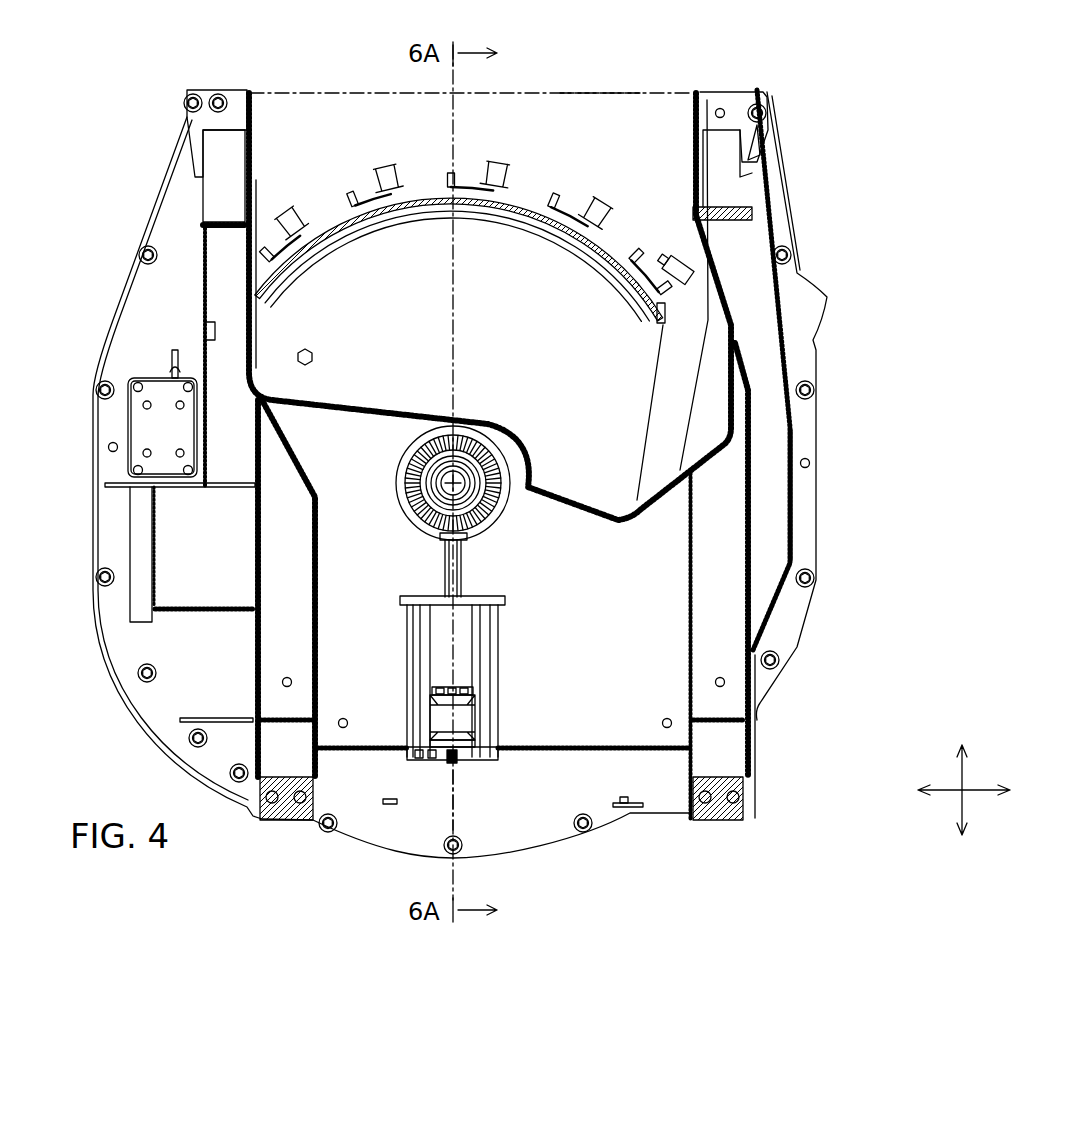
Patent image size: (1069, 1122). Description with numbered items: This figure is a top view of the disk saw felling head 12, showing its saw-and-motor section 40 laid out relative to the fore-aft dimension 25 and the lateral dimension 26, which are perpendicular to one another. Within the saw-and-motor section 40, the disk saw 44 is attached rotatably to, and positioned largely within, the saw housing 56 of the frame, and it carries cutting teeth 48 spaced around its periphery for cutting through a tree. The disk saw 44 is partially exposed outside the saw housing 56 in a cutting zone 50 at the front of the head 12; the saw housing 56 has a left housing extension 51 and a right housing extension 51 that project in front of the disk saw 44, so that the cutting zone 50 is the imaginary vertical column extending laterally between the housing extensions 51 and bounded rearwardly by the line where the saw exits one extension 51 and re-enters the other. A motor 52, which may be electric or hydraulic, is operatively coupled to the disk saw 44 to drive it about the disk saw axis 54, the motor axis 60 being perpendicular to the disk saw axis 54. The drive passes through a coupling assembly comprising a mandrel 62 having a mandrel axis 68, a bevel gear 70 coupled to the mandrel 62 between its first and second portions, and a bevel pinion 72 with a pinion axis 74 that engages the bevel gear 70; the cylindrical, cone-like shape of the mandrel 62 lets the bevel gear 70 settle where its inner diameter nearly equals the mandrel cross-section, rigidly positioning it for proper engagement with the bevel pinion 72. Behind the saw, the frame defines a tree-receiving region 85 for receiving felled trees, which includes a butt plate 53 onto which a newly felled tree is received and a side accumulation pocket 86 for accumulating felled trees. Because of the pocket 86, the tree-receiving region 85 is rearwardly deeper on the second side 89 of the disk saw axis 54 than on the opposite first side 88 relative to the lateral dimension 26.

The head 12 is at (342, 45).
The fore-aft dimension 25 is at (965, 800).
The lateral dimension 26 is at (985, 790).
The saw-and-motor section 40 is at (818, 216).
The disk saw 44 is at (430, 243).
The cutting teeth 48 is at (603, 212).
The cutting zone 50 is at (607, 90).
The housing extension 51 is at (233, 108).
The motor 52 is at (466, 665).
The butt plate 53 is at (365, 368).
The disk saw axis 54 is at (515, 445).
The saw housing 56 is at (795, 515).
The motor axis 60 is at (463, 806).
The mandrel 62 is at (500, 497).
The mandrel axis 68 is at (530, 423).
The bevel gear 70 is at (490, 520).
The bevel pinion 72 is at (460, 588).
The pinion axis 74 is at (467, 803).
The tree-receiving region 85 is at (477, 360).
The side accumulation pocket 86 is at (722, 426).
The first side 88 is at (422, 575).
The second side 89 is at (461, 570).